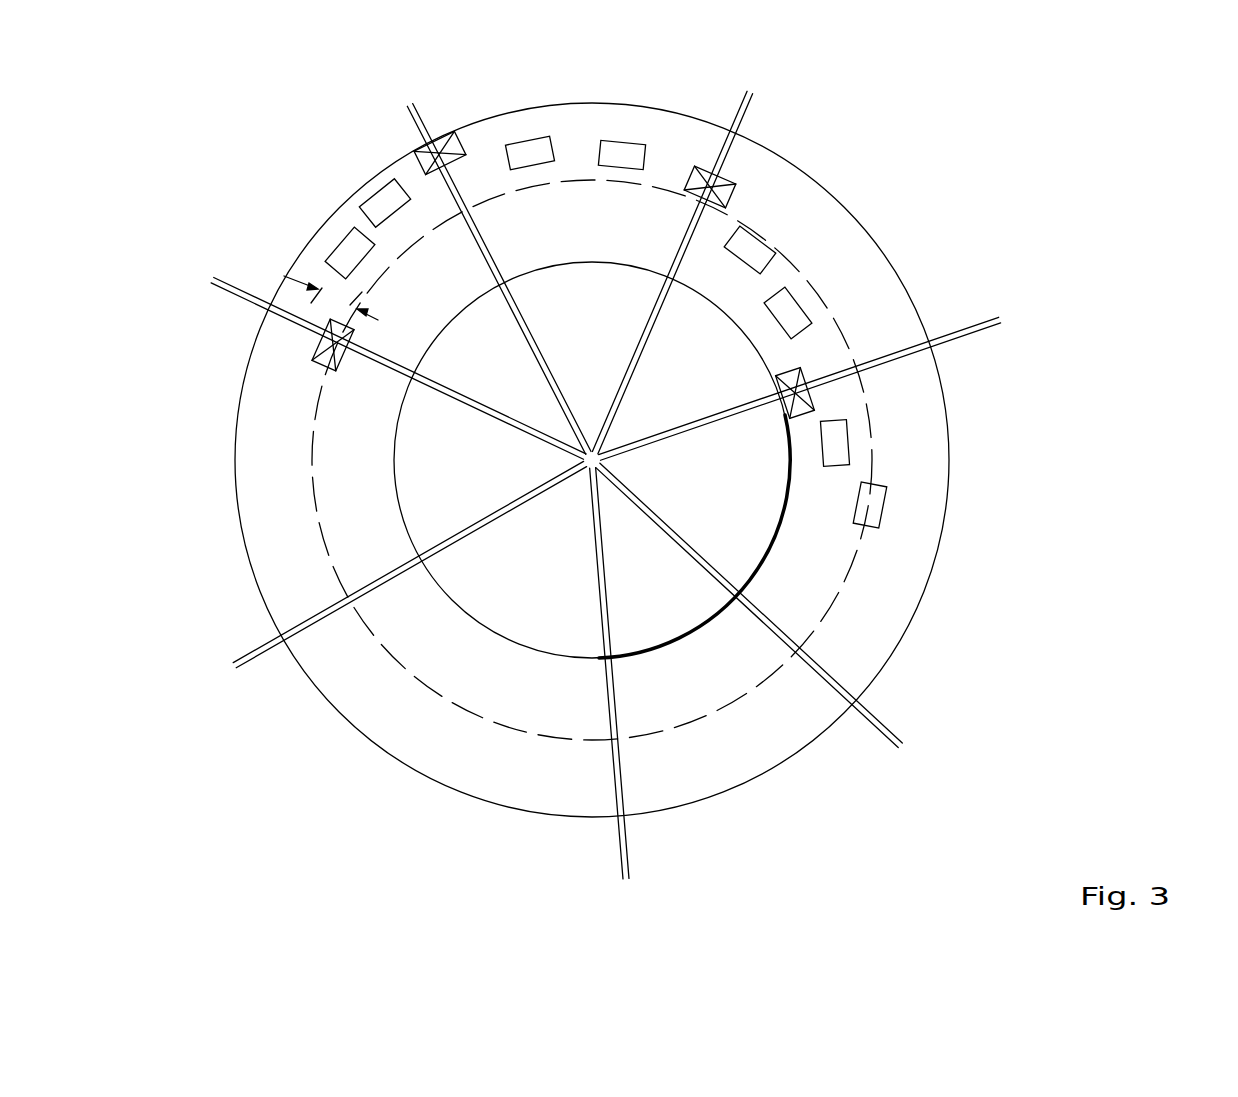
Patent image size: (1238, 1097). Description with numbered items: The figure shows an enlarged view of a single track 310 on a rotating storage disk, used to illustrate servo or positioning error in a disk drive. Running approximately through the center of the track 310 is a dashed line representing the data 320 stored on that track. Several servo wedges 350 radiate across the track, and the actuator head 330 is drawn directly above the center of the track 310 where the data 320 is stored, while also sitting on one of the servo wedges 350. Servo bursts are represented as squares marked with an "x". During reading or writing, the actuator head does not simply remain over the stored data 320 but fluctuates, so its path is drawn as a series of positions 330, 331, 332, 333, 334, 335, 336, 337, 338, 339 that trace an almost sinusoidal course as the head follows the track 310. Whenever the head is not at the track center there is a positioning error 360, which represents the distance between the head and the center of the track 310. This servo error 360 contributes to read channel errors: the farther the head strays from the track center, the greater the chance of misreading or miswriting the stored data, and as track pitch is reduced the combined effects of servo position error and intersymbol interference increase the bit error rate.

The track 310 is at (493, 633).
The data 320 is at (497, 723).
The actuator head 330 is at (313, 370).
The actuator head position 331 is at (333, 247).
The actuator head position 332 is at (370, 185).
The actuator head position 333 is at (448, 133).
The actuator head position 334 is at (547, 138).
The actuator head position 335 is at (628, 143).
The actuator head position 336 is at (727, 181).
The actuator head position 337 is at (757, 242).
The actuator head position 338 is at (798, 305).
The actuator head position 339 is at (805, 372).
The servo wedge 350 is at (411, 103).
The positioning error 360 is at (331, 298).